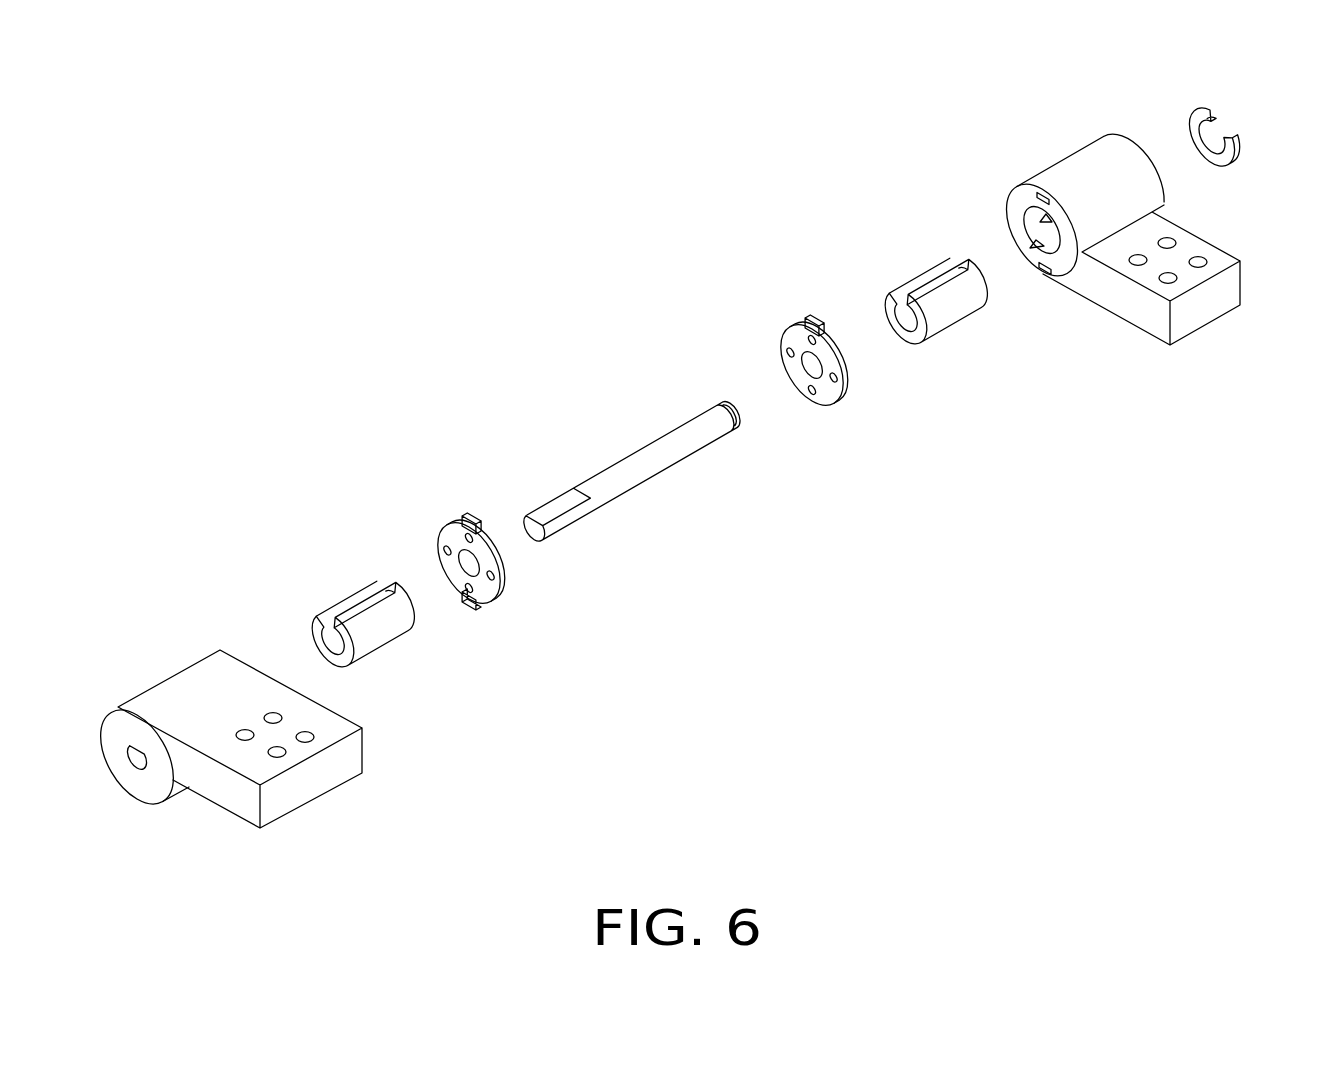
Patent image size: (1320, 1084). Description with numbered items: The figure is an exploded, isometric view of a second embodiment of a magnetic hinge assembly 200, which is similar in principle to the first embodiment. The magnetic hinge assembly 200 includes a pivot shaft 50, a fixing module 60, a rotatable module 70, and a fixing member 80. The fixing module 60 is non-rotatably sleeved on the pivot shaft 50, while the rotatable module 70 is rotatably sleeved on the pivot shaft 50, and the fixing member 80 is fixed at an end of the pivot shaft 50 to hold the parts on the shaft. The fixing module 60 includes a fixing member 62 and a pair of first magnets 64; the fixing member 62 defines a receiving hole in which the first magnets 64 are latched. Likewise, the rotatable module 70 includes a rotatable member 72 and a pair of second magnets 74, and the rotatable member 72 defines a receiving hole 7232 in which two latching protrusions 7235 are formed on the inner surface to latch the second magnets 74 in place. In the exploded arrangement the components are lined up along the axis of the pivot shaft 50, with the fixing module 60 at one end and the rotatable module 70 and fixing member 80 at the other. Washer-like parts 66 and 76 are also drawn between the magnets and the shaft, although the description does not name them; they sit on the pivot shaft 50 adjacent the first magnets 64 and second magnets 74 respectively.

The magnetic hinge assembly 200 is at (540, 252).
The fixing module 60 is at (349, 467).
The fixing member 62 is at (178, 657).
The first magnets 64 is at (296, 580).
The first washer 66 is at (435, 508).
The pivot shaft 50 is at (650, 460).
The rotatable module 70 is at (960, 133).
The rotatable member 72 is at (1040, 163).
The second magnets 74 is at (910, 247).
The second washer 76 is at (790, 323).
The receiving hole 7232 is at (1033, 233).
The latching protrusions 7235 is at (1050, 247).
The fixing member 80 is at (1205, 110).